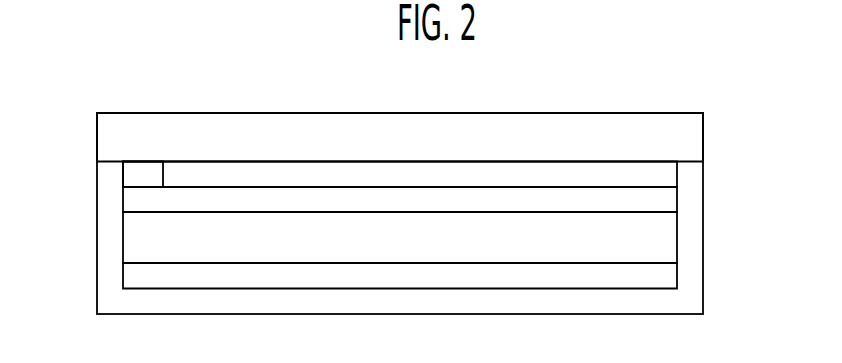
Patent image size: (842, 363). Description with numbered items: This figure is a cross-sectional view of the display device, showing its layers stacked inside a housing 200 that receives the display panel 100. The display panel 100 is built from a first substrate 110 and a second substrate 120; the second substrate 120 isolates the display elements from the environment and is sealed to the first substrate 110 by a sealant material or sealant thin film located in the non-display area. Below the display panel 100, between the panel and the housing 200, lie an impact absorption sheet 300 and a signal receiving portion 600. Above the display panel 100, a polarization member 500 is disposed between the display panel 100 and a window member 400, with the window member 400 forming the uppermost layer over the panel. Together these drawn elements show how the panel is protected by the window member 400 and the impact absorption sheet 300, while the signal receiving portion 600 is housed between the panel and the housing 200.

The display panel 100 is at (474, 226).
The first substrate 110 is at (663, 247).
The second substrate 120 is at (664, 199).
The housing 200 is at (668, 298).
The impact absorption sheet 300 is at (663, 270).
The window member 400 is at (687, 133).
The polarization member 500 is at (666, 171).
The signal receiving portion 600 is at (143, 171).